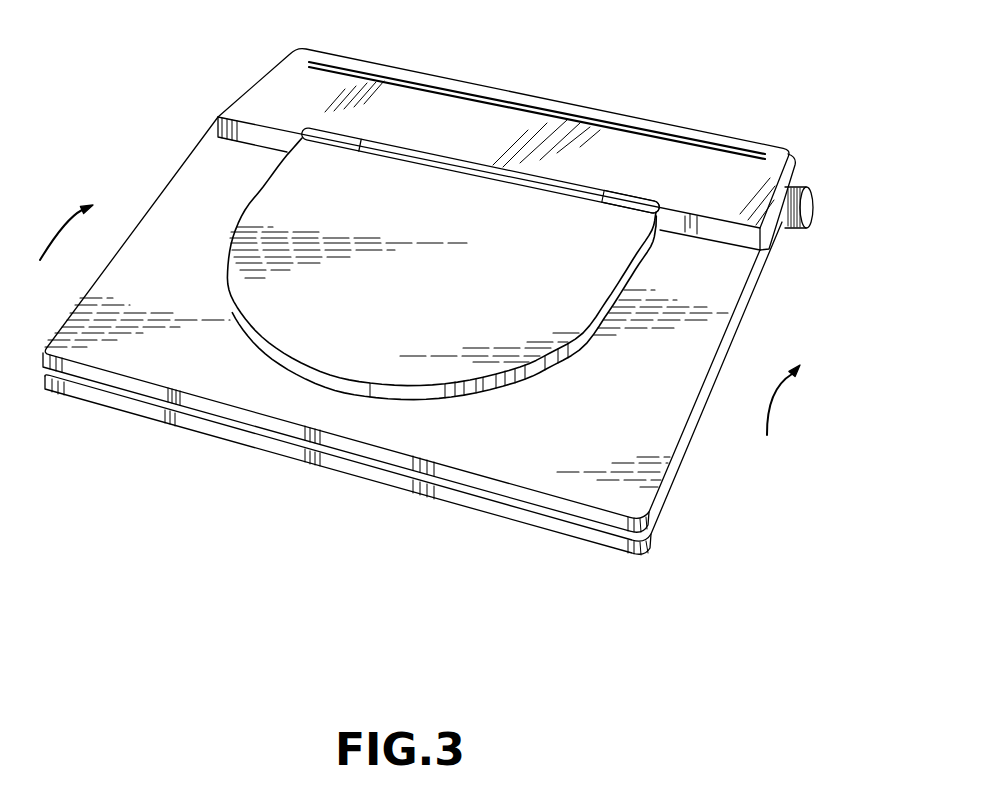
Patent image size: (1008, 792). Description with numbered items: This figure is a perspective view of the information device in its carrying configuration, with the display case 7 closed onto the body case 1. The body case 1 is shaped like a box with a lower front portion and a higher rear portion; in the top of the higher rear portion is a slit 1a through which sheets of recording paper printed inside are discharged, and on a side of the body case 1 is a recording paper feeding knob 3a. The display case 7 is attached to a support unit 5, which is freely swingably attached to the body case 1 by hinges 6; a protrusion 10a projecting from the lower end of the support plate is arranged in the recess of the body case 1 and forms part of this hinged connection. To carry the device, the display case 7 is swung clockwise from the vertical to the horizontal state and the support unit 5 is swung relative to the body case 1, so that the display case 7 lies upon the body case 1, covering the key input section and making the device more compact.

The body case 1 is at (462, 502).
The slit 1a is at (557, 117).
The recording paper feeding knob 3a is at (812, 207).
The support unit 5 is at (268, 190).
The hinges 6 is at (638, 205).
The display case 7 is at (327, 443).
The protrusion 10a is at (415, 153).